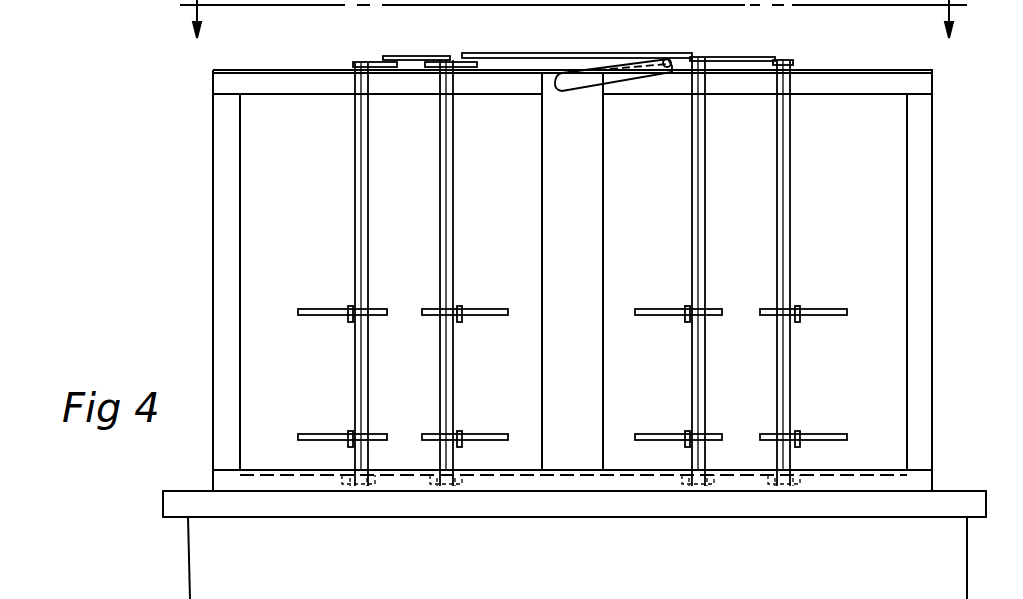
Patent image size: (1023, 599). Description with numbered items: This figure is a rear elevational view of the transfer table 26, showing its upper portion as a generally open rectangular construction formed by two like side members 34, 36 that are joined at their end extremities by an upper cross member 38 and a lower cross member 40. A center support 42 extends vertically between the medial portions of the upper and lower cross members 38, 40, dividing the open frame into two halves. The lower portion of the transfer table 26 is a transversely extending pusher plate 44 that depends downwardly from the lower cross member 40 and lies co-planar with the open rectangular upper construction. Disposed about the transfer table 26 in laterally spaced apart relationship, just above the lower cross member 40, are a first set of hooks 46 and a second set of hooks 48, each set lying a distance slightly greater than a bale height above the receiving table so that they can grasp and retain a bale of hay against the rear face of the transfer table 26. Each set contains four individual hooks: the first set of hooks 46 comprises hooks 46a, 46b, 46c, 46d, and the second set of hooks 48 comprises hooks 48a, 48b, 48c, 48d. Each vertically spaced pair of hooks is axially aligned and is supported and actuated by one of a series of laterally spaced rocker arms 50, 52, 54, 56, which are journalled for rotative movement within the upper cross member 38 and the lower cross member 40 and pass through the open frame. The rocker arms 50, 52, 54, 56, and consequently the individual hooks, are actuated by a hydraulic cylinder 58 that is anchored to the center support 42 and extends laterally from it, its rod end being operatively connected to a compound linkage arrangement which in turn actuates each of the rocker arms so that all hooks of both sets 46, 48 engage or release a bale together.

The transfer table 26 is at (178, 81).
The side member 34 is at (224, 262).
The side member 36 is at (933, 192).
The upper cross member 38 is at (858, 82).
The lower cross member 40 is at (916, 480).
The center support 42 is at (604, 132).
The pusher plate 44 is at (577, 558).
The first set of hooks 46 is at (398, 288).
The hook 46a is at (313, 309).
The hook 46b is at (482, 309).
The hook 46c is at (318, 434).
The hook 46d is at (480, 434).
The second set of hooks 48 is at (720, 299).
The hook 48a is at (655, 309).
The hook 48b is at (830, 309).
The hook 48c is at (655, 434).
The hook 48d is at (840, 434).
The rocker arm 50 is at (357, 120).
The rocker arm 52 is at (442, 120).
The rocker arm 54 is at (693, 150).
The rocker arm 56 is at (791, 118).
The hydraulic cylinder 58 is at (600, 76).